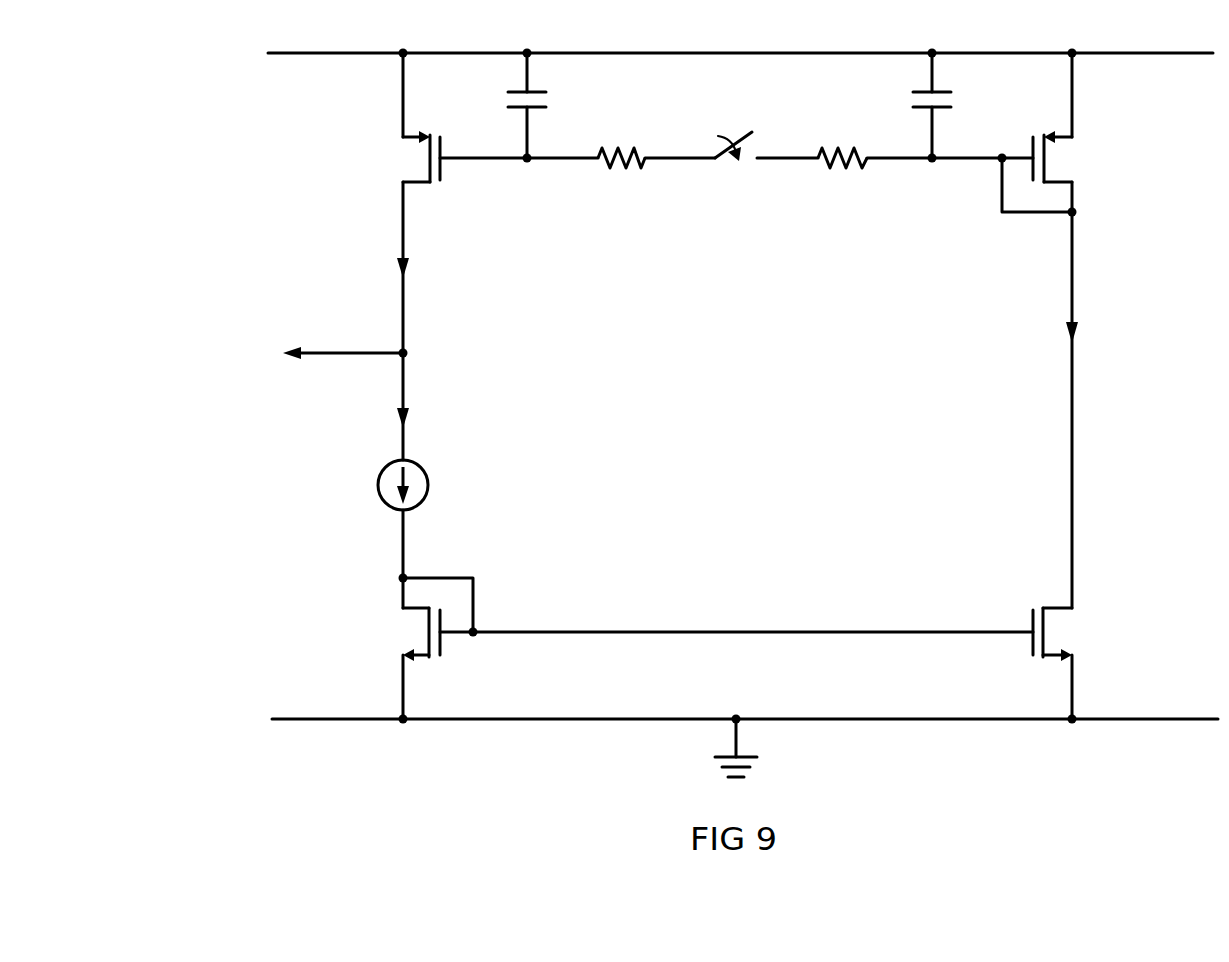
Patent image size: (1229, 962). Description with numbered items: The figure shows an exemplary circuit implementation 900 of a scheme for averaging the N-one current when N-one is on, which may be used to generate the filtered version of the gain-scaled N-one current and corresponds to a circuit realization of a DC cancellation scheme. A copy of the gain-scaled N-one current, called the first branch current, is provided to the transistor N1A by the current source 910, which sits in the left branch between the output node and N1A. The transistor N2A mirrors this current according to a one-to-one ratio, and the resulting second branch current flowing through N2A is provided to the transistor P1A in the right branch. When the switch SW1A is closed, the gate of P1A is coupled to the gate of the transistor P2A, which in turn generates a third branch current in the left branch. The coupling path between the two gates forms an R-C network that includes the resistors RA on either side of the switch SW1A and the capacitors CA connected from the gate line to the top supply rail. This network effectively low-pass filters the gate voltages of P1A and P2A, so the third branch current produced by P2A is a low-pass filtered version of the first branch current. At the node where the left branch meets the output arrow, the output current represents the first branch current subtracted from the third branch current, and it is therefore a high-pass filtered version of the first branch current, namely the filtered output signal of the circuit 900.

The circuit implementation 900 is at (640, 396).
The current source 910 is at (381, 477).
The transistor P2A is at (399, 156).
The transistor P1A is at (1074, 156).
The transistor N1A is at (398, 634).
The transistor N2A is at (1075, 634).
The capacitor CA is at (749, 105).
The resistor RA is at (732, 173).
The switch SW1A is at (729, 133).